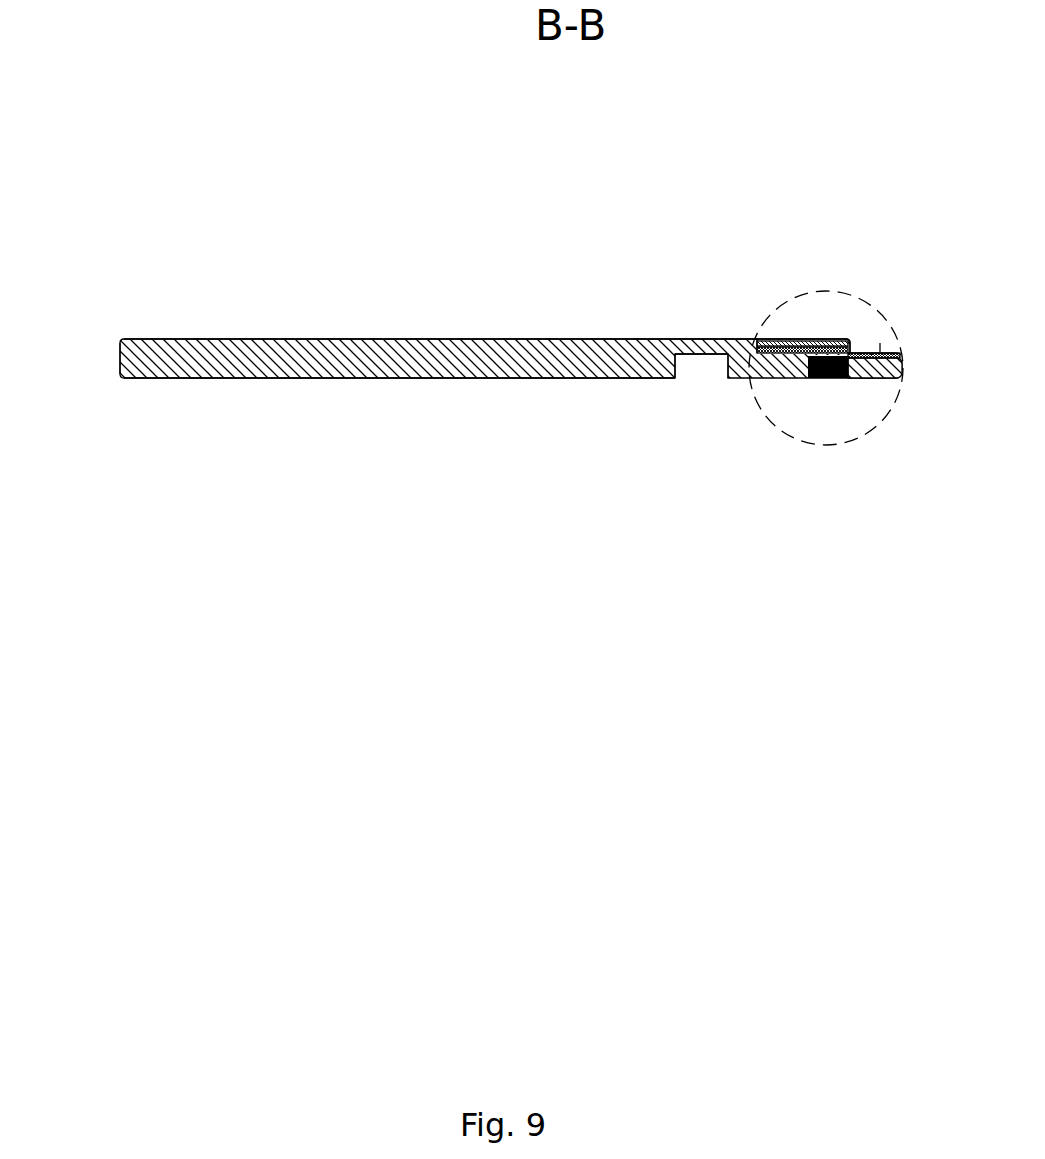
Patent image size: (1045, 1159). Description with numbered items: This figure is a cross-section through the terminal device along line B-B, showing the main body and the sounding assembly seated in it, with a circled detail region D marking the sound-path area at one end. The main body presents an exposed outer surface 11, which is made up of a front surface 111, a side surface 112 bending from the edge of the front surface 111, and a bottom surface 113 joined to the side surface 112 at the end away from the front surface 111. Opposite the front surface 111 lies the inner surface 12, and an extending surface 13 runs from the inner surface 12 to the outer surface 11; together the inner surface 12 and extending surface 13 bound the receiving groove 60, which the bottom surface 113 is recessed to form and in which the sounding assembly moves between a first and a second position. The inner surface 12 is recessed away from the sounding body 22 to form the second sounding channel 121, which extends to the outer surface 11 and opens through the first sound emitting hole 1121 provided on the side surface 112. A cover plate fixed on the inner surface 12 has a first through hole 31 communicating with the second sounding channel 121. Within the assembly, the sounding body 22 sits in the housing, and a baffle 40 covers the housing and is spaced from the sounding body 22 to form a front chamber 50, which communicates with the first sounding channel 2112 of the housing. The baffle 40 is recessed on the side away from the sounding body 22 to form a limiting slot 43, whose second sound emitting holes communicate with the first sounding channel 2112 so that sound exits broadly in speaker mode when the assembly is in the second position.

The outer surface 11 is at (68, 292).
The front surface 111 is at (155, 339).
The side surface 112 is at (121, 360).
The bottom surface 113 is at (152, 378).
The inner surface 12 is at (698, 355).
The second sounding channel 121 is at (757, 340).
The extending surface 13 is at (675, 364).
The receiving groove 60 is at (710, 365).
The first through hole 31 is at (766, 345).
The front chamber 50 is at (812, 347).
The sounding body 22 is at (828, 366).
The baffle 40 is at (852, 353).
The limiting slot 43 is at (898, 366).
The first sounding channel 2112 is at (862, 366).
The first sound emitting hole 1121 is at (850, 352).
The detail region D is at (824, 292).